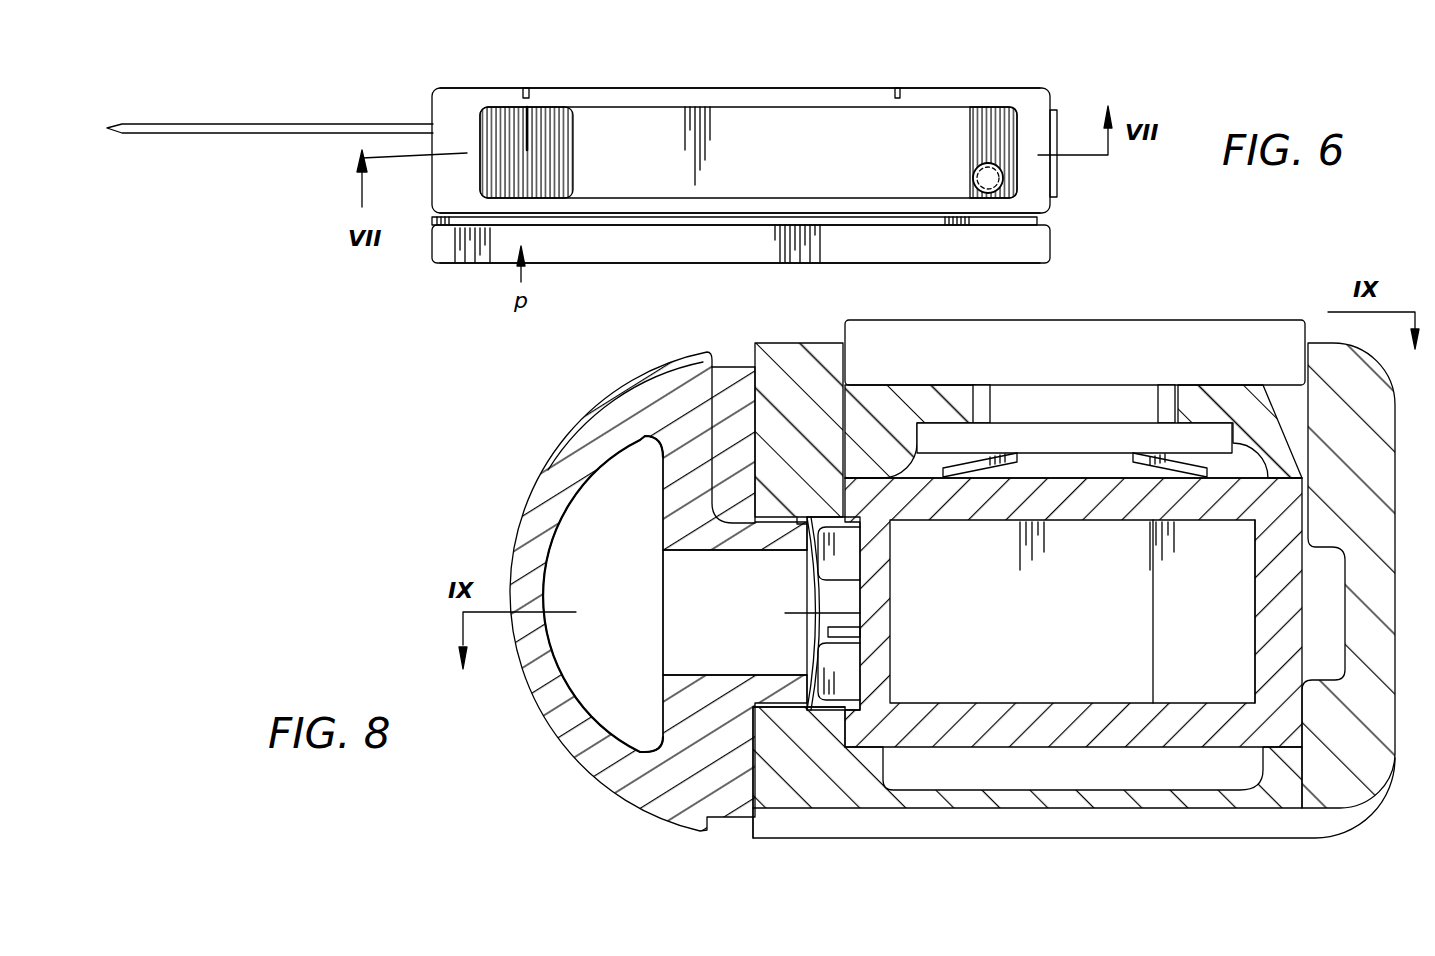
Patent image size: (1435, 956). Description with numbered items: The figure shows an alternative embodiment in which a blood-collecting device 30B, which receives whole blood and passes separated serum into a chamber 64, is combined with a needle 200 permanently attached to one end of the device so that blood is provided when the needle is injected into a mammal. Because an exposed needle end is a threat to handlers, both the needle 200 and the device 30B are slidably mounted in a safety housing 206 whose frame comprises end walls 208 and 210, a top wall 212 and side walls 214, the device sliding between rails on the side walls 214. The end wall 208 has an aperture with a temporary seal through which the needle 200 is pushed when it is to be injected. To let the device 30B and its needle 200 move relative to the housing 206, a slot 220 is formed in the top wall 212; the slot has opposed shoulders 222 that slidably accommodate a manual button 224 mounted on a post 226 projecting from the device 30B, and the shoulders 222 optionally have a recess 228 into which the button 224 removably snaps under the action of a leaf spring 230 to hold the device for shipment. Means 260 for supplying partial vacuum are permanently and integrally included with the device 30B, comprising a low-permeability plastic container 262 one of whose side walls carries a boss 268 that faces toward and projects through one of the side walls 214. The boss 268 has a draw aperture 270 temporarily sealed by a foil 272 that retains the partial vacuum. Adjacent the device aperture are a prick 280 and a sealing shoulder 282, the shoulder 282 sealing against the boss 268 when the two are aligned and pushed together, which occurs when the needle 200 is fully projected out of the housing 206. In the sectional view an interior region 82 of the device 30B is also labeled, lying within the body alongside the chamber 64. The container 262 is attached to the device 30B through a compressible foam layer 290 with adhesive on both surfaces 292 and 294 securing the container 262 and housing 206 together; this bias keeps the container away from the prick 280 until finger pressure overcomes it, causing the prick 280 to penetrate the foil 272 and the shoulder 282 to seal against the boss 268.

In FIG. 6, the needle 200 is at (243, 126).
In FIG. 6, the safety housing 206 is at (733, 95).
In FIG. 8, the safety housing 206 is at (1014, 808).
In FIG. 6, the end wall 208 is at (431, 108).
In FIG. 6, the end wall 210 is at (1052, 100).
In FIG. 6, the top wall 212 is at (635, 88).
In FIG. 8, the side walls 214 is at (803, 343).
In FIG. 6, the slot 220 is at (780, 108).
In FIG. 8, the shoulders 222 is at (945, 414).
In FIG. 6, the manual button 224 is at (567, 188).
In FIG. 8, the manual button 224 is at (1102, 335).
In FIG. 8, the post 226 is at (1080, 462).
In FIG. 8, the recess 228 is at (872, 452).
In FIG. 8, the leaf spring 230 is at (964, 473).
In FIG. 6, the vacuum source means 260 is at (977, 228).
In FIG. 8, the vacuum source means 260 is at (526, 489).
In FIG. 6, the container 262 is at (483, 250).
In FIG. 8, the container 262 is at (593, 752).
In FIG. 8, the boss 268 is at (758, 540).
In FIG. 8, the draw aperture 270 is at (677, 672).
In FIG. 8, the foil seal 272 is at (808, 580).
In FIG. 8, the prick 280 is at (827, 632).
In FIG. 8, the sealing shoulder 282 is at (850, 548).
In FIG. 8, the compressible foam layer 290 is at (729, 370).
In FIG. 8, the adhesive surface 292 is at (690, 378).
In FIG. 8, the adhesive surface 294 is at (780, 768).
In FIG. 6, the device 30B is at (956, 86).
In FIG. 8, the device 30B is at (1243, 512).
In FIG. 8, the chamber 64 is at (1215, 685).
In FIG. 8, the fluid chamber 82 is at (985, 614).